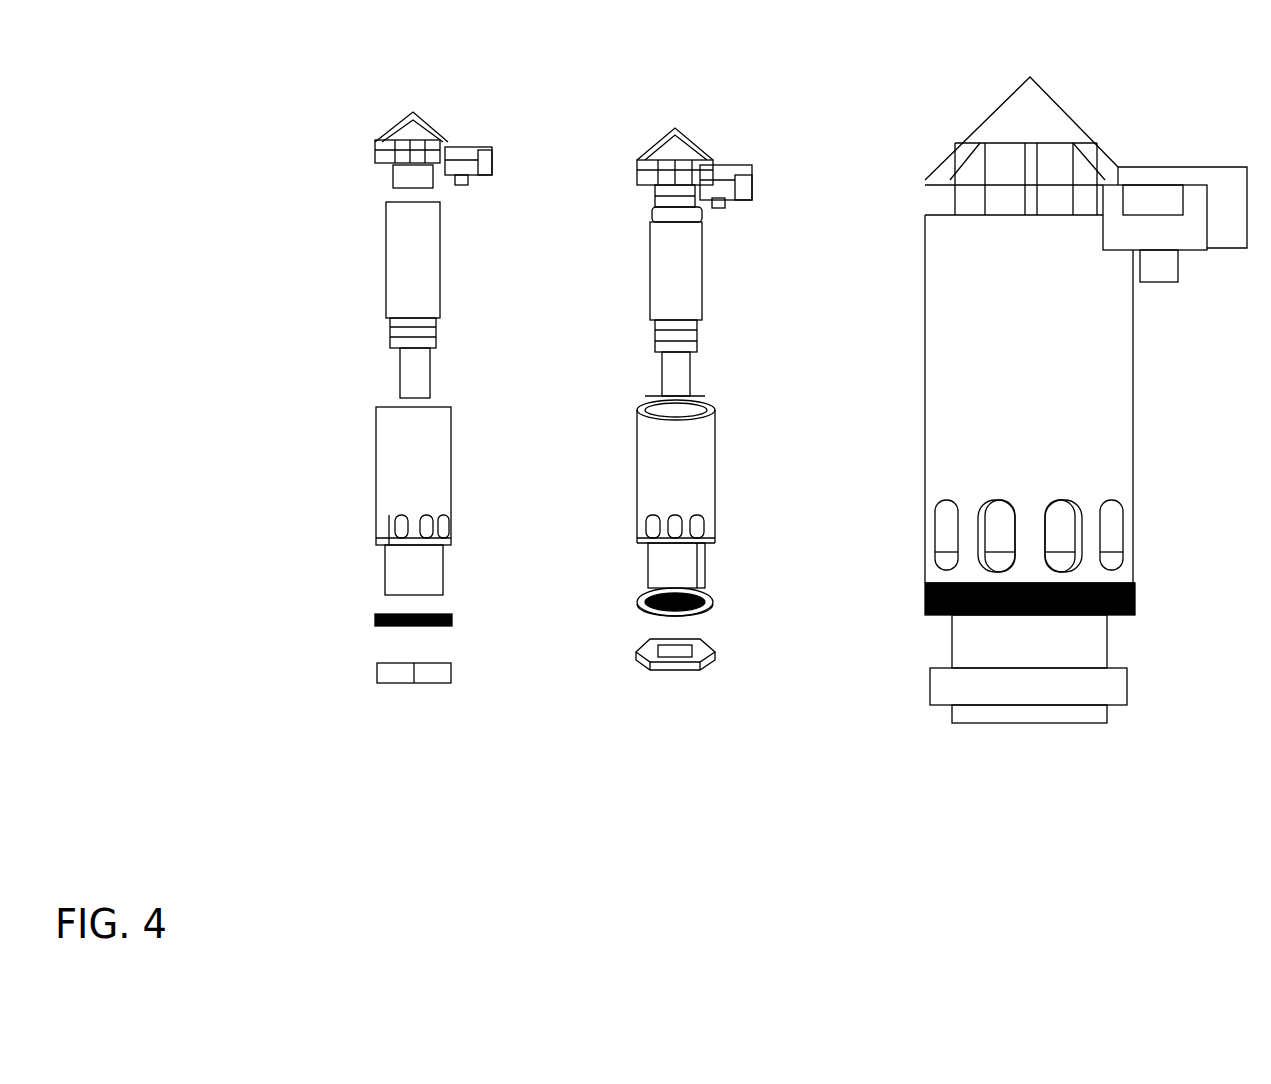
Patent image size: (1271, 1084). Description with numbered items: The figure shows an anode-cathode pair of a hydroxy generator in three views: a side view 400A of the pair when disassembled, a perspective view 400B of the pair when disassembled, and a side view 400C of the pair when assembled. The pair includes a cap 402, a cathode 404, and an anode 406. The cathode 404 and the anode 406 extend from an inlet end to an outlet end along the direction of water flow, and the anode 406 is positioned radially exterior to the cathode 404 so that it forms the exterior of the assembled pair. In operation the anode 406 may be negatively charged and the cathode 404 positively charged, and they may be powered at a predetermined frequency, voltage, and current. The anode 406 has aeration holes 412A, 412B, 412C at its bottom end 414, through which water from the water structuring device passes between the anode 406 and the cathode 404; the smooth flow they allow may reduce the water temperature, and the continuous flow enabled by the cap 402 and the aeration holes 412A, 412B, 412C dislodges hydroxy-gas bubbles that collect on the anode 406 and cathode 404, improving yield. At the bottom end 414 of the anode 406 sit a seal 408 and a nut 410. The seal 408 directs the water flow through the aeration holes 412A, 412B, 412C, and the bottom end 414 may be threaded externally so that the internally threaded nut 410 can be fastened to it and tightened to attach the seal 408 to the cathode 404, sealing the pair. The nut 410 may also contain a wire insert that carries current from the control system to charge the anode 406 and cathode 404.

The side view 400A is at (355, 98).
The perspective view 400B is at (637, 106).
The side view 400C is at (945, 98).
The cap 402 is at (396, 166).
The cathode 404 is at (405, 262).
The anode 406 is at (388, 432).
The seal 408 is at (378, 616).
The nut 410 is at (405, 680).
The aeration hole 412A is at (405, 527).
The aeration hole 412B is at (430, 520).
The aeration hole 412C is at (700, 520).
The bottom end 414 is at (395, 581).